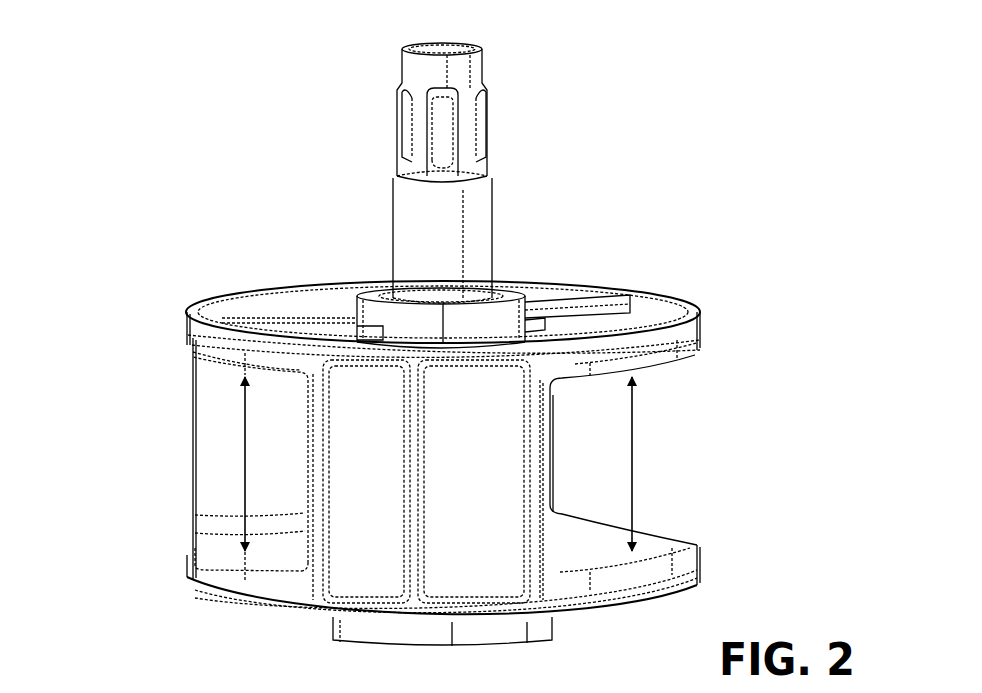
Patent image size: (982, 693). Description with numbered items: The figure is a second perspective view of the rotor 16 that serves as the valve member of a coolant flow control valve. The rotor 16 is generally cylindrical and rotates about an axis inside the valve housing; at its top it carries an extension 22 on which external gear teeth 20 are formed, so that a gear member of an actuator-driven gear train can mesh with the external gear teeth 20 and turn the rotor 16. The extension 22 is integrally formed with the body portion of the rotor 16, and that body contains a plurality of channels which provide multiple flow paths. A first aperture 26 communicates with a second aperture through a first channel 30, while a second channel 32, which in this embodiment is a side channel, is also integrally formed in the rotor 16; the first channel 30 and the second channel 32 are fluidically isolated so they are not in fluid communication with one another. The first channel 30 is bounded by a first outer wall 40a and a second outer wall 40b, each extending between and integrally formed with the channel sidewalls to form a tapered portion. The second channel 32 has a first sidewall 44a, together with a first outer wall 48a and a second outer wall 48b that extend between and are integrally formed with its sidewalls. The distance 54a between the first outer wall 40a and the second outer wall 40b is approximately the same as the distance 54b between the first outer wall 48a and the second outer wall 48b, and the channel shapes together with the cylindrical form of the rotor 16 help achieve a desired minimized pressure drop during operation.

The rotor 16 is at (662, 284).
The external gear teeth 20 is at (447, 146).
The extension 22 is at (410, 233).
The first aperture 26 is at (699, 543).
The first channel 30 is at (696, 400).
The second channel 32 is at (184, 478).
The first outer wall 40a is at (687, 370).
The second outer wall 40b is at (670, 540).
The first sidewall 44a is at (197, 442).
The first outer wall 48a is at (213, 365).
The second outer wall 48b is at (226, 550).
The distance 54a is at (641, 472).
The distance 54b is at (236, 481).